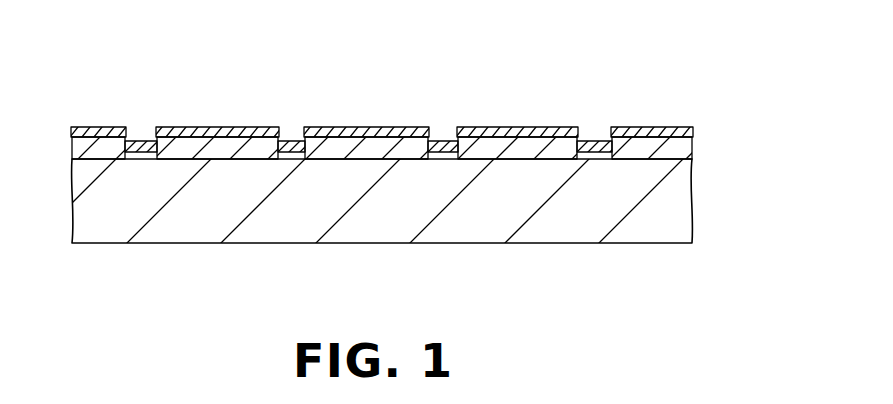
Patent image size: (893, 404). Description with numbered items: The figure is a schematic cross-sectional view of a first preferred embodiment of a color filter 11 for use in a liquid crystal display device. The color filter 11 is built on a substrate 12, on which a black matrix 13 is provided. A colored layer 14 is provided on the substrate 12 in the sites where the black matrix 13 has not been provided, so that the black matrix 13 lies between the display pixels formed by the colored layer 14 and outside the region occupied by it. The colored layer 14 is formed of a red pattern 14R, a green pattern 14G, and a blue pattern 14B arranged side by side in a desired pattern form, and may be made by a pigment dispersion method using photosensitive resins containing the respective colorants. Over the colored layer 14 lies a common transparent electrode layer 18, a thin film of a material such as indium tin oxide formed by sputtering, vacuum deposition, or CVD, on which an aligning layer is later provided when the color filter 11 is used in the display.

The color filter 11 is at (590, 77).
The substrate 12 is at (680, 217).
The black matrix 13 is at (147, 160).
The colored layer 14 is at (426, 108).
The blue pattern 14B is at (90, 133).
The red pattern 14R is at (227, 133).
The green pattern 14G is at (360, 128).
The common transparent electrode layer 18 is at (415, 127).